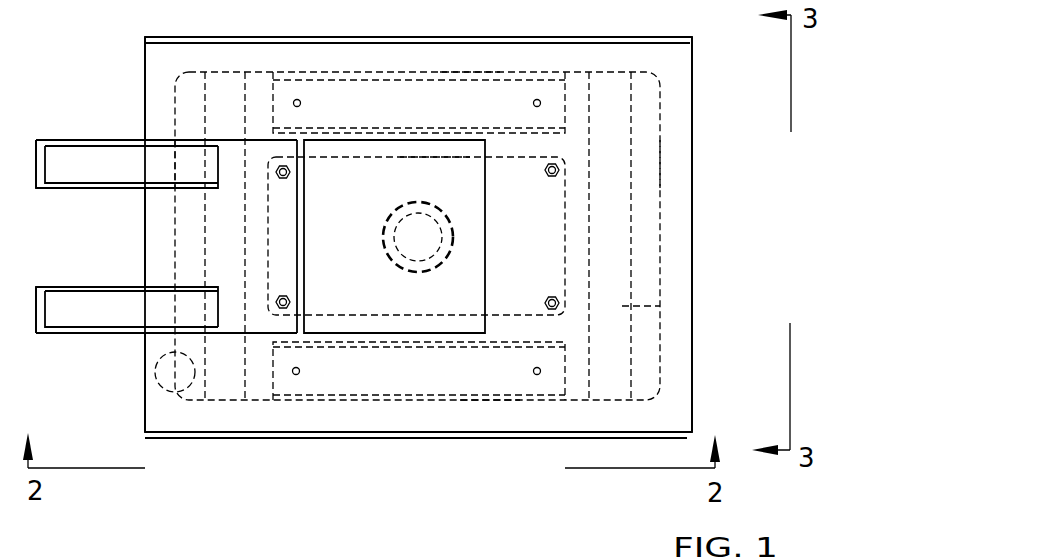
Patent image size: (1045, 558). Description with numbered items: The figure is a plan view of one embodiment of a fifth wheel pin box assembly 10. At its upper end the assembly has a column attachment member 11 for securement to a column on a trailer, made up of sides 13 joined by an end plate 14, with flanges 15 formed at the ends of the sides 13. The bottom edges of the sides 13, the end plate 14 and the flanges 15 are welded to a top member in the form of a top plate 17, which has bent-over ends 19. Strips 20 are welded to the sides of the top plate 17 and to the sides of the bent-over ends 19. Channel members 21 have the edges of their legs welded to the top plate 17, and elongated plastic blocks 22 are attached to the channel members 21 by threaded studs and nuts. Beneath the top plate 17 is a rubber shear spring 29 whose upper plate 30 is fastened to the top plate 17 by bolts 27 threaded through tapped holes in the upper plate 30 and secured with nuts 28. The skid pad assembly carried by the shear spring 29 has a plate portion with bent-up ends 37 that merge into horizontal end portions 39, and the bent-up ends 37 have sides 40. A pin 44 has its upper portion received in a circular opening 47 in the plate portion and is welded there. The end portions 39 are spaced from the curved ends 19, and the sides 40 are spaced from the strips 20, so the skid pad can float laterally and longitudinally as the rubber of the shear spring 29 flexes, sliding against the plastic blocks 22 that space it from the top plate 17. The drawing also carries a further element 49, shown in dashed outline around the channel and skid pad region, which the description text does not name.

The fifth wheel pin box assembly 10 is at (495, 234).
The column attachment member 11 is at (63, 138).
The sides 13 is at (131, 138).
The end plate 14 is at (348, 230).
The flanges 15 is at (63, 177).
The top plate 17 is at (538, 422).
The bent-over ends 19 is at (692, 271).
The strips 20 is at (431, 34).
The channel members 21 is at (470, 72).
The elongated plastic blocks 22 is at (306, 78).
The bolts 27 is at (267, 302).
The nuts 28 is at (283, 179).
The rubber shear spring 29 is at (513, 167).
The upper plate 30 is at (433, 167).
The bent-up ends 37 is at (188, 360).
The horizontal end portions 39 is at (647, 183).
The sides 40 is at (214, 70).
The pin 44 is at (408, 228).
The circular opening 47 is at (382, 240).
The gasket 49 is at (160, 78).